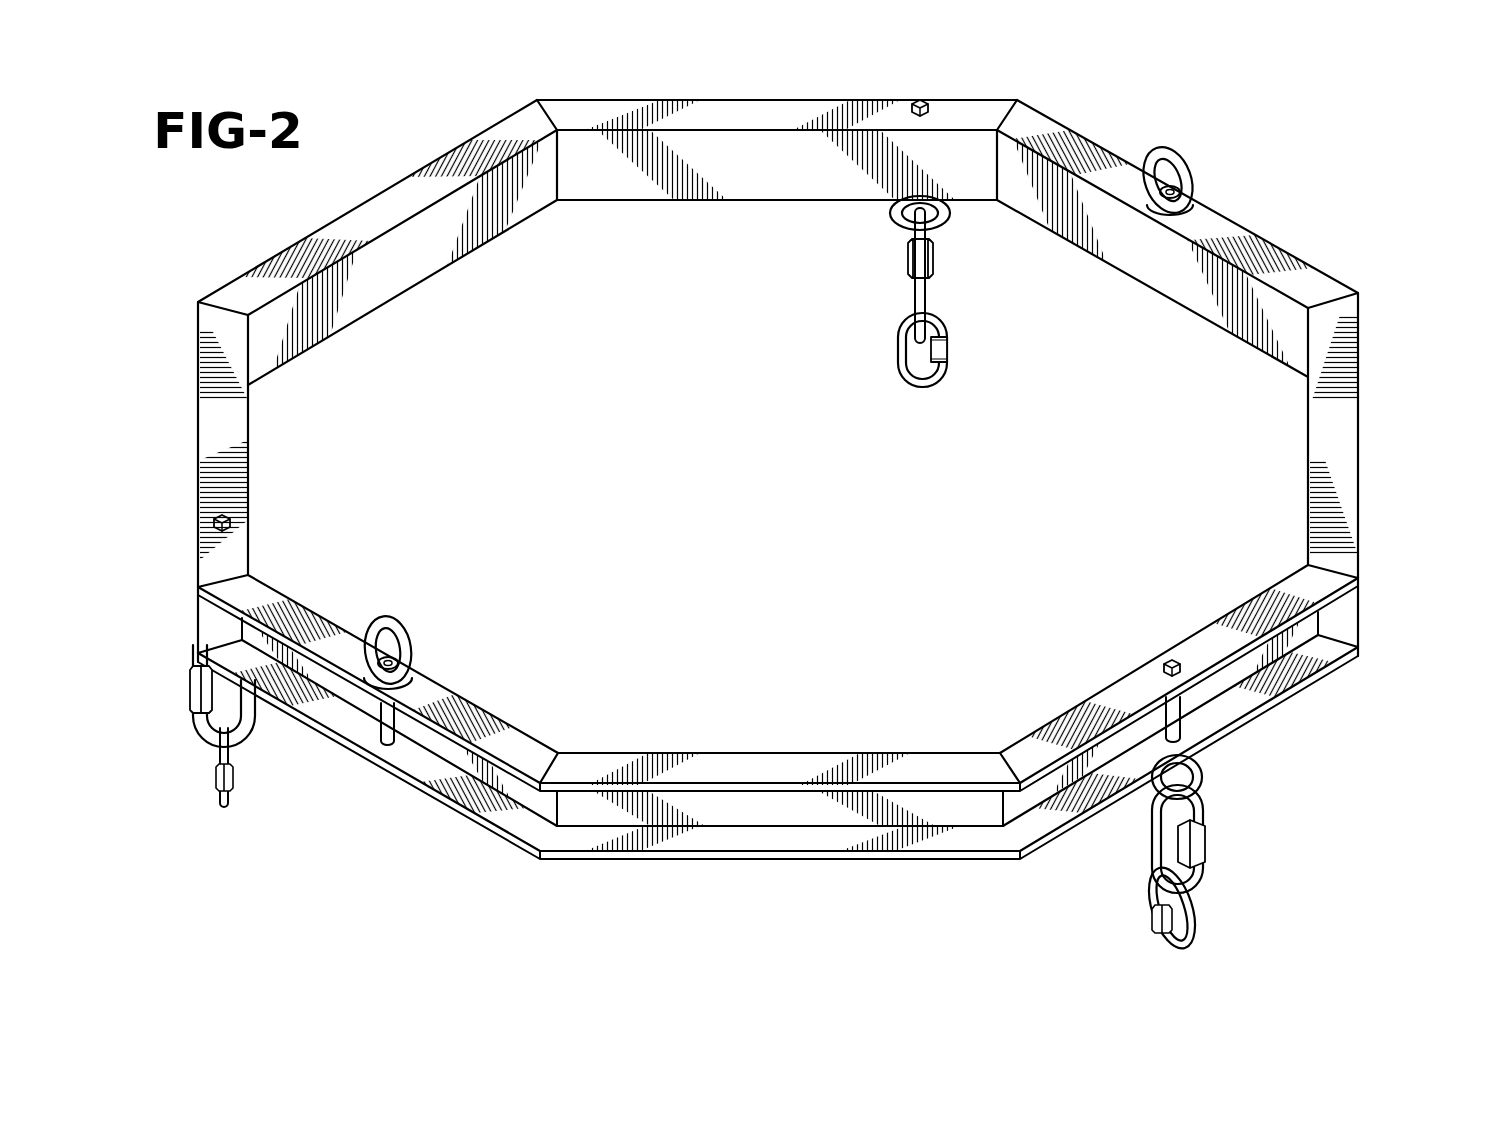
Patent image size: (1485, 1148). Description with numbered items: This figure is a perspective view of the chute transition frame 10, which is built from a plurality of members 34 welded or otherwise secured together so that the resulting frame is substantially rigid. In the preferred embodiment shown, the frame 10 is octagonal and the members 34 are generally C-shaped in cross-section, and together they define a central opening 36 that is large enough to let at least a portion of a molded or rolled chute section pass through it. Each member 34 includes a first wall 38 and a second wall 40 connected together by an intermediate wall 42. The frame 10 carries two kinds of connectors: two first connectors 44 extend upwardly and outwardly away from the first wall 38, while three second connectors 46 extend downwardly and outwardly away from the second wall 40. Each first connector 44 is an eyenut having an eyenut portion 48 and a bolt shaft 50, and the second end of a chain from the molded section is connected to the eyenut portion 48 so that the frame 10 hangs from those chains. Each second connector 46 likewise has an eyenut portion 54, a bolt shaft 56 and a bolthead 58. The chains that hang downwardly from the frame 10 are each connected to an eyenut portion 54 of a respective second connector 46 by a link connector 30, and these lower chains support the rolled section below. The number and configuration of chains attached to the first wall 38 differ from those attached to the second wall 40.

The chute transition frame 10 is at (1318, 147).
The link connector 30 is at (912, 294).
The member 34 is at (806, 92).
The central opening 36 is at (1243, 436).
The first wall 38 is at (762, 108).
The second wall 40 is at (815, 846).
The intermediate wall 42 is at (757, 172).
The first connector 44 is at (1190, 152).
The second connector 46 is at (894, 230).
The eyenut portion 48 is at (1197, 177).
The bolt shaft 50 is at (382, 748).
The eyenut portion 54 is at (955, 222).
The bolt shaft 56 is at (1152, 700).
The bolthead 58 is at (928, 100).